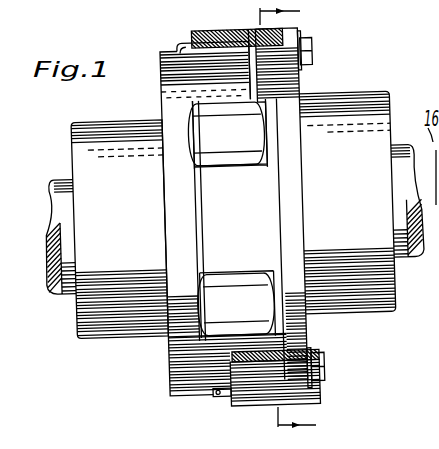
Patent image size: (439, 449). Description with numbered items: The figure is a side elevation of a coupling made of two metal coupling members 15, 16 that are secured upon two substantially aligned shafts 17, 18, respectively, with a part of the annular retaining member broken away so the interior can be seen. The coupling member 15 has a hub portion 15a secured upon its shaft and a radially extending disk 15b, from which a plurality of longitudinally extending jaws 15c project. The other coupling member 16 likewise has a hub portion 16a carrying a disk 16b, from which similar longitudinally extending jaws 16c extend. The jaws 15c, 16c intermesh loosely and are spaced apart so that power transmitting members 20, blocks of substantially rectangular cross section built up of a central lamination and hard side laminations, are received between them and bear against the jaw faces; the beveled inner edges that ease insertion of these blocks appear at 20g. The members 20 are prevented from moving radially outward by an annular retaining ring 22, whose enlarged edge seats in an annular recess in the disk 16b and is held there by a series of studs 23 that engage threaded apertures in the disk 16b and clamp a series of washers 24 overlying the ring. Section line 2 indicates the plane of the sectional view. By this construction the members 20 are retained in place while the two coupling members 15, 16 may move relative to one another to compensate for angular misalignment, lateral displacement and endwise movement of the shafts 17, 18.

The section line 2- 2 is at (296, 219).
The coupling member 15 is at (78, 116).
The hub portion 15a is at (115, 320).
The radially extending disk 15b is at (170, 357).
The longitudinally extending jaws 15c is at (122, 400).
The coupling member 16 is at (348, 321).
The hub portion 16a is at (358, 127).
The disk 16b is at (285, 102).
The longitudinally extending jaws 16c is at (245, 210).
The shaft 17 is at (64, 286).
The shaft 18 is at (402, 272).
The power transmitting members 20 is at (222, 128).
The roller pocket 20g is at (357, 167).
The annular retaining ring 22 is at (224, 36).
The studs 23 is at (313, 54).
The washers 24 is at (298, 45).